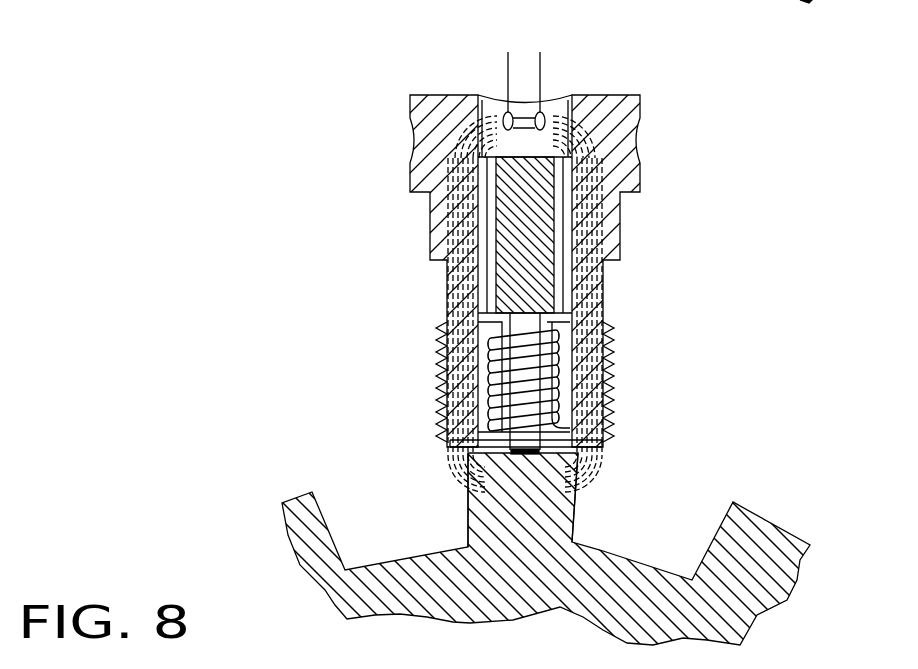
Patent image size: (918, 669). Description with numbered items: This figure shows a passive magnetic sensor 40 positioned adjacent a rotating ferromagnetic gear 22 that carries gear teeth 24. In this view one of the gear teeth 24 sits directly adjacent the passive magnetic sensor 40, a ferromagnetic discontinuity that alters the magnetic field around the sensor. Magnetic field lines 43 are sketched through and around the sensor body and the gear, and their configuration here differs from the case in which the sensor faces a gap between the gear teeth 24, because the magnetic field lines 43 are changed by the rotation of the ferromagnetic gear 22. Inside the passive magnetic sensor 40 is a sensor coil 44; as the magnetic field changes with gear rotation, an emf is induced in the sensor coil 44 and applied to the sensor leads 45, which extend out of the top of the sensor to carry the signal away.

The ferromagnetic gear 22 is at (590, 560).
The gear teeth 24 is at (578, 506).
The passive magnetic sensor 40 is at (658, 152).
The magnetic field lines 43 is at (640, 178).
The sensor coil 44 is at (565, 390).
The sensor leads 45 is at (550, 52).